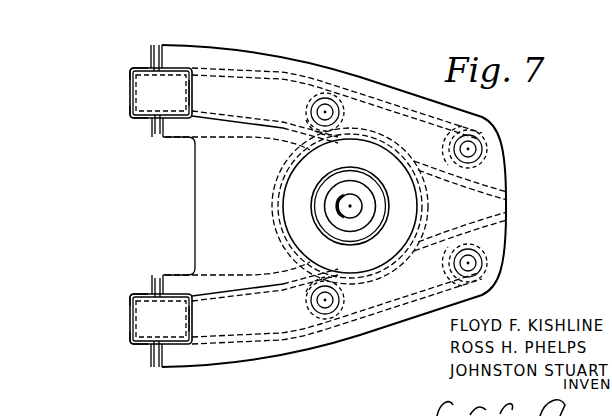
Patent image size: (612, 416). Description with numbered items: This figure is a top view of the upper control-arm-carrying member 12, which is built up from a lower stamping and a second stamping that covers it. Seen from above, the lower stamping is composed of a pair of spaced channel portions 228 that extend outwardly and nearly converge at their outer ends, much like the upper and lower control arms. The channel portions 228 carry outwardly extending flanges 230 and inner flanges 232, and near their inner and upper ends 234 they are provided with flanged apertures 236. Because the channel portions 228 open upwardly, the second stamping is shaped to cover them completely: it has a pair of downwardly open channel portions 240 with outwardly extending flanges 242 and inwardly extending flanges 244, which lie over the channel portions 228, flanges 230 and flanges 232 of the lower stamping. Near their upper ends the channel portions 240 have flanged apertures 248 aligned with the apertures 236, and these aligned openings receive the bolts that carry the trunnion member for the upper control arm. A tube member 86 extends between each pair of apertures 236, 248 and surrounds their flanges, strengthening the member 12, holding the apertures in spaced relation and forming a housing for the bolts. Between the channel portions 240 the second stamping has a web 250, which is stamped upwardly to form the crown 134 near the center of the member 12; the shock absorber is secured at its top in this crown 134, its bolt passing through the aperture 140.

The upper control-arm-carrying member 12 is at (356, 349).
The tube member 86 is at (147, 70).
The crown 134 is at (365, 150).
The aperture 140 is at (352, 204).
The channel portions 228 is at (133, 118).
The flanges 230 is at (153, 66).
The inner flanges 232 is at (152, 133).
The inner and upper ends 234 is at (134, 69).
The flanged apertures 236 is at (134, 104).
The channel portions 240 is at (193, 118).
The flanges 242 is at (177, 55).
The flanges 244 is at (160, 138).
The flanged apertures 248 is at (192, 100).
The web 250 is at (230, 196).